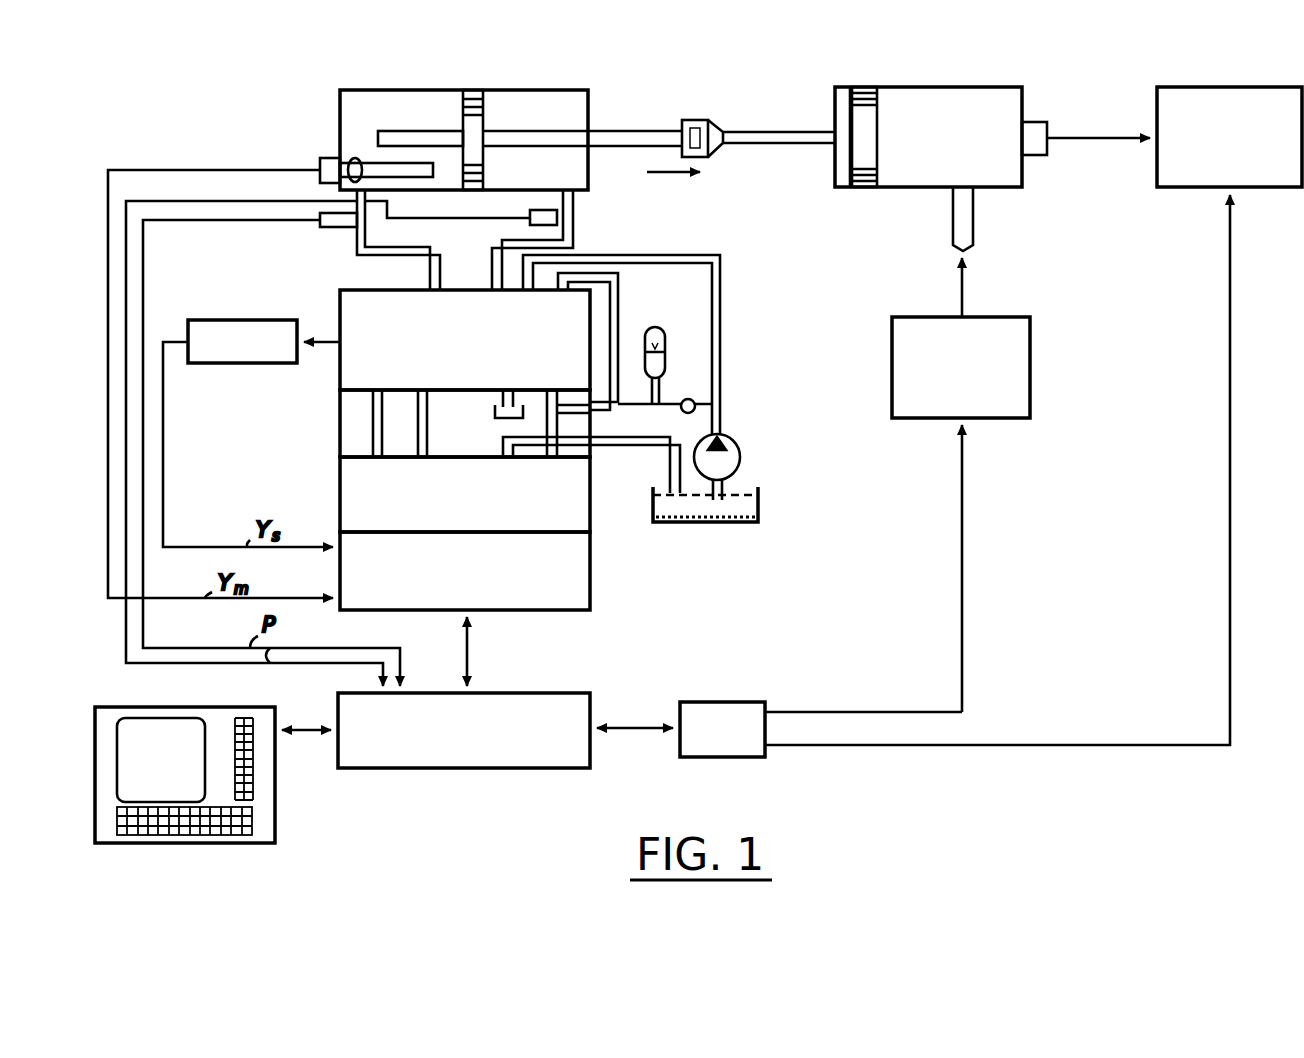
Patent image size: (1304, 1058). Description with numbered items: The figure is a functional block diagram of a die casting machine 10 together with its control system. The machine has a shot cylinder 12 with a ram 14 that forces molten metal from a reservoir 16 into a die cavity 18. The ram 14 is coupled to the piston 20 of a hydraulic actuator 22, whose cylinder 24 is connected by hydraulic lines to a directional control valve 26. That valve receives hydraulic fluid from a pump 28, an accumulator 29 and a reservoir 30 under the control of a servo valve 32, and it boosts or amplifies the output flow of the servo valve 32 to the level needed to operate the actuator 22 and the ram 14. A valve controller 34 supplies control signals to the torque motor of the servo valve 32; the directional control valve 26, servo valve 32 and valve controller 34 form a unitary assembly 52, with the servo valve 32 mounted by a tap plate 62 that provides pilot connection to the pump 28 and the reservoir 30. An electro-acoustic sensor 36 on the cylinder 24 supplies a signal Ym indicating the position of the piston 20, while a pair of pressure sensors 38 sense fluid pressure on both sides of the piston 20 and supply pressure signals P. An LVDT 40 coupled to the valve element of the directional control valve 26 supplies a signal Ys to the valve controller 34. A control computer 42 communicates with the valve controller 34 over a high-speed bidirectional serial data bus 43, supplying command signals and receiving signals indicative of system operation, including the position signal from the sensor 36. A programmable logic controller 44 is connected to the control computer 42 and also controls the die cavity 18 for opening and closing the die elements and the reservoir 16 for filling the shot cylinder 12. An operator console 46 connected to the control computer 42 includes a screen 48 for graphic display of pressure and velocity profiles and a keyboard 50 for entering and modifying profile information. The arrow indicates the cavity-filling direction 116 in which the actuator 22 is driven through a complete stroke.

The die casting machine 10 is at (764, 74).
The shot cylinder 12 is at (935, 87).
The ram 14 is at (858, 191).
The reservoir 16 is at (1025, 317).
The die cavity 18 is at (1208, 86).
The piston 20 is at (479, 91).
The hydraulic actuator 22 is at (413, 90).
The cylinder 24 is at (554, 91).
The directional control valve 26 is at (346, 290).
The pump 28 is at (735, 447).
The accumulator 29 is at (664, 337).
The reservoir 30 is at (758, 496).
The servo valve 32 is at (340, 470).
The valve controller 34 is at (593, 580).
The electro-acoustic sensor 36 is at (320, 158).
The pressure sensors 38 is at (553, 222).
The LVDT 40 is at (255, 320).
The control computer 42 is at (560, 693).
The serial data bus 43 is at (478, 660).
The programmable logic controller 44 is at (715, 702).
The operator console 46 is at (112, 700).
The screen 48 is at (125, 757).
The keyboard 50 is at (250, 823).
The unitary assembly 52 is at (600, 385).
The tap plate 62 is at (340, 415).
The cavity-filling direction 116 is at (668, 174).